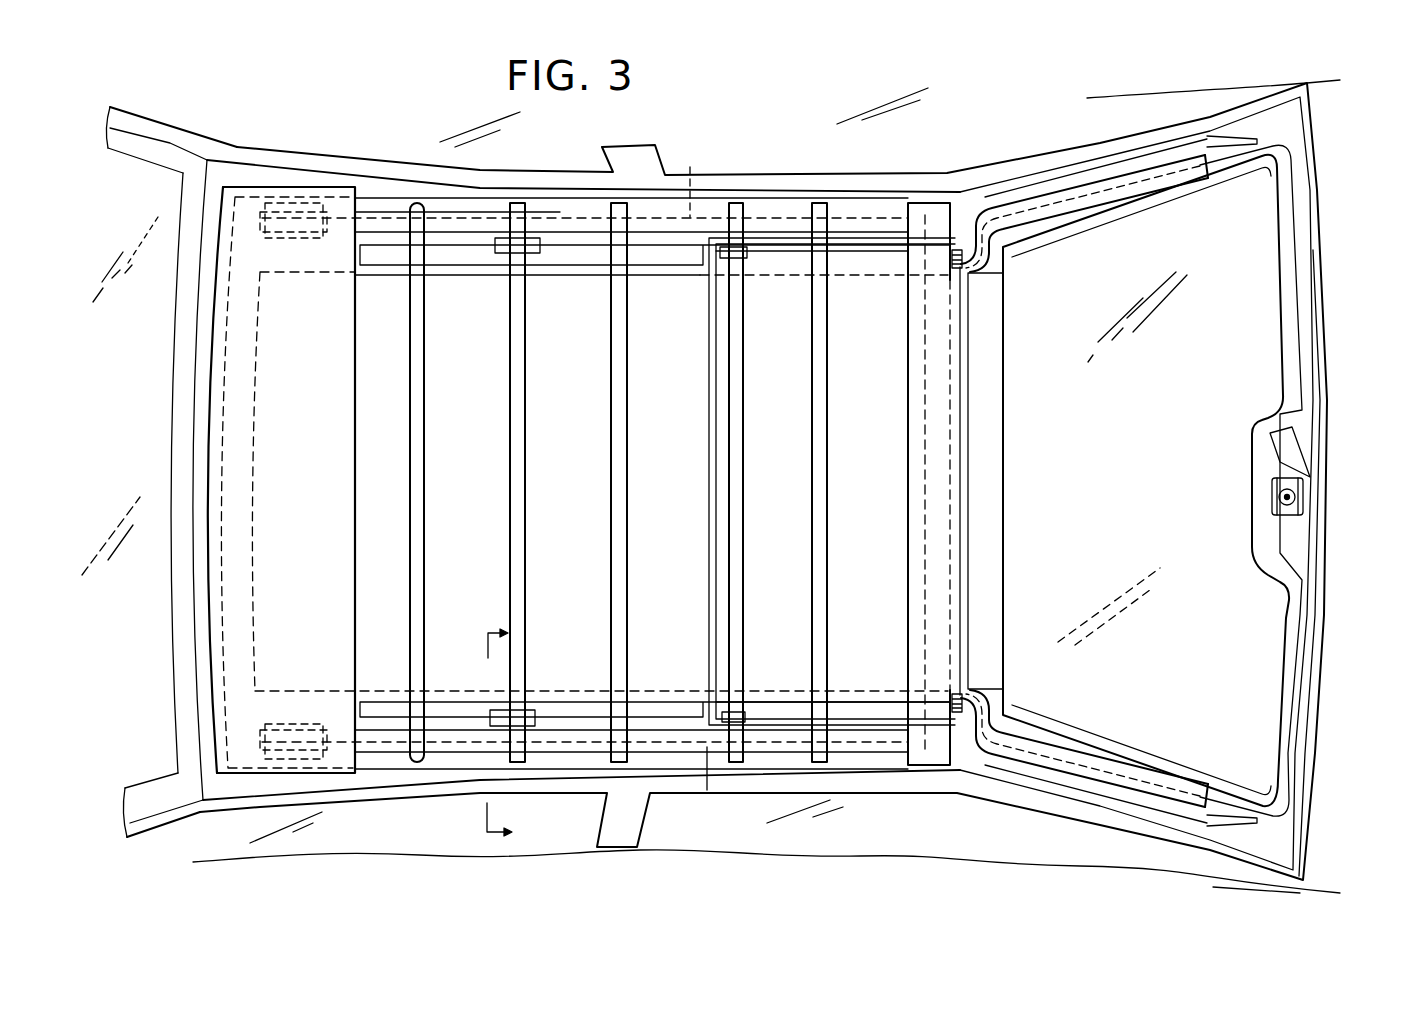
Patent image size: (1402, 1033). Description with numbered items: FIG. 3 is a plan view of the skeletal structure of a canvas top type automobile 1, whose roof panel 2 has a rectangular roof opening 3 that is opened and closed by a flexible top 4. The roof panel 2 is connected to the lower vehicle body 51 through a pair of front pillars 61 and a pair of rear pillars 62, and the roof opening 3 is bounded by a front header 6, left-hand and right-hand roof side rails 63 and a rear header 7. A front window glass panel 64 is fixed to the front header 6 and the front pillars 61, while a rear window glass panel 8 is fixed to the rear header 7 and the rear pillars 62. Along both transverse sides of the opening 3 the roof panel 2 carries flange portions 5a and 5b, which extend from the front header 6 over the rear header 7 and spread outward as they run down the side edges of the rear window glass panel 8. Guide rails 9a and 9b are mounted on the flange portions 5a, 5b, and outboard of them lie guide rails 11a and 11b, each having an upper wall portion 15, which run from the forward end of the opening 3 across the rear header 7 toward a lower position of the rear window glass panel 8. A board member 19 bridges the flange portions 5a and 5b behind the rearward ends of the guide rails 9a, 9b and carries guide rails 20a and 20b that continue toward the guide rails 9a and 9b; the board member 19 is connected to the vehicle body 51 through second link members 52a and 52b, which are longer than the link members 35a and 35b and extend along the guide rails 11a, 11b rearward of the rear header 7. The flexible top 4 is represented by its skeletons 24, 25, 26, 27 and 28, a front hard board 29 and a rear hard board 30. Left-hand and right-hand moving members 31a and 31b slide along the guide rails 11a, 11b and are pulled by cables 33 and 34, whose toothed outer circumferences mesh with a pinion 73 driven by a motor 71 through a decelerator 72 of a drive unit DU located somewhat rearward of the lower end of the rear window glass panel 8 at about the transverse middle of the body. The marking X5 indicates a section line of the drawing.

The automobile 1 is at (730, 128).
The roof panel 2 is at (233, 790).
The roof opening 3 is at (383, 677).
The flexible top 4 is at (340, 191).
The flange portion 5a is at (385, 232).
The flange portion 5b is at (562, 763).
The front header 6 is at (200, 557).
The rear header 7 is at (987, 540).
The rear window glass panel 8 is at (1160, 443).
The guide rail 9a is at (567, 257).
The guide rail 9b is at (460, 710).
The guide rail 11a is at (693, 175).
The guide rail 11b is at (707, 790).
The upper wall portion 15 is at (780, 223).
The board member 19 is at (708, 618).
The guide rail 20a is at (878, 250).
The guide rail 20b is at (867, 720).
The skeleton 24 is at (420, 585).
The skeleton 25 is at (518, 595).
The skeleton 26 is at (617, 592).
The skeleton 27 is at (731, 577).
The skeleton 28 is at (820, 590).
The front hard board 29 is at (262, 613).
The rear hard board 30 is at (933, 397).
The moving member 31a is at (280, 197).
The moving member 31b is at (298, 753).
The cable 33 is at (1280, 685).
The cable 34 is at (1295, 752).
The link member 35a is at (266, 165).
The link member 35b is at (297, 817).
The vehicle body 51 is at (1207, 887).
The link member 52a is at (995, 202).
The link member 52b is at (1070, 790).
The front pillar 61 is at (157, 145).
The rear pillar 62 is at (1027, 160).
The roof side rail 63 is at (762, 184).
The front window glass panel 64 is at (124, 458).
The motor 71 is at (1270, 437).
The decelerator 72 is at (1272, 495).
The pinion 73 is at (1267, 510).
The drive unit DU is at (1295, 485).
The section line X5 is at (478, 735).